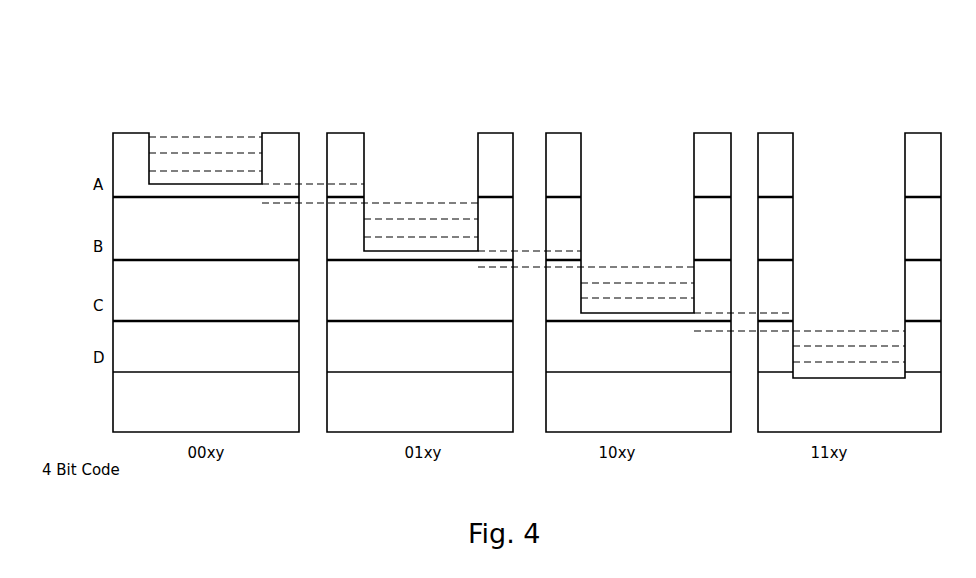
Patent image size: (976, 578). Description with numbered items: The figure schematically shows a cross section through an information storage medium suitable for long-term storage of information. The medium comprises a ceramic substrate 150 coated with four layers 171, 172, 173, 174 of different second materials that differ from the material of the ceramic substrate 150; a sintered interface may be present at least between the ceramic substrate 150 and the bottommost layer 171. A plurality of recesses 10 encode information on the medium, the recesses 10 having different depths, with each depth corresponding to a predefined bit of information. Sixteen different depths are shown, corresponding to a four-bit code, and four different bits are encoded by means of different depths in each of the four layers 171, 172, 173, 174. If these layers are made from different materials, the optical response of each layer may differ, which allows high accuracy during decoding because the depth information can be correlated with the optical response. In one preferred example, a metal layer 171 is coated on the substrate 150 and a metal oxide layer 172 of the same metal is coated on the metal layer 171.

The recesses 10 is at (180, 84).
The layer 174 is at (112, 158).
The layer 173 is at (112, 222).
The layer 172 is at (112, 280).
The bottommost layer 171 is at (112, 337).
The ceramic substrate 150 is at (112, 409).